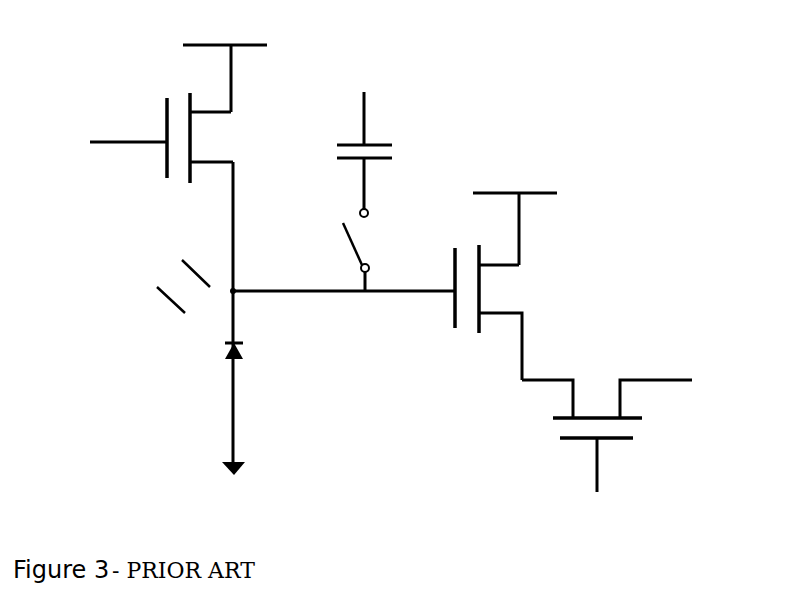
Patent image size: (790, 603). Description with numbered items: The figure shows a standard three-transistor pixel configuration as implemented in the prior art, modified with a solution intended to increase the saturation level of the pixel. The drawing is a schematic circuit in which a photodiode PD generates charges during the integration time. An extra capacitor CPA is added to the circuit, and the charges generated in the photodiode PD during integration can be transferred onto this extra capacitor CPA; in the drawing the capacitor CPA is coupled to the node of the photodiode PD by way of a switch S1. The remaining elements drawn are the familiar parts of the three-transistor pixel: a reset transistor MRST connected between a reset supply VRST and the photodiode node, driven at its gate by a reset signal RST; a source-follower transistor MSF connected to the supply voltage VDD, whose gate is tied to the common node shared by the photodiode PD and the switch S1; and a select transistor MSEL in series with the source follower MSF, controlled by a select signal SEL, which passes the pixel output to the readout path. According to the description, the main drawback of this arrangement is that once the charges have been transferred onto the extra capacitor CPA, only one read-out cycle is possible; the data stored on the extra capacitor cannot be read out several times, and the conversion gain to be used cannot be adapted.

The reset transistor MRST is at (217, 114).
The reset voltage supply VRST is at (247, 26).
The reset signal RST is at (105, 142).
The photodiode PD is at (306, 318).
The extra capacitor CPA is at (365, 154).
The switch S1 is at (337, 257).
The source follower transistor MSF is at (506, 286).
The supply voltage VDD is at (512, 173).
The select transistor MSEL is at (612, 436).
The select signal SEL is at (593, 522).